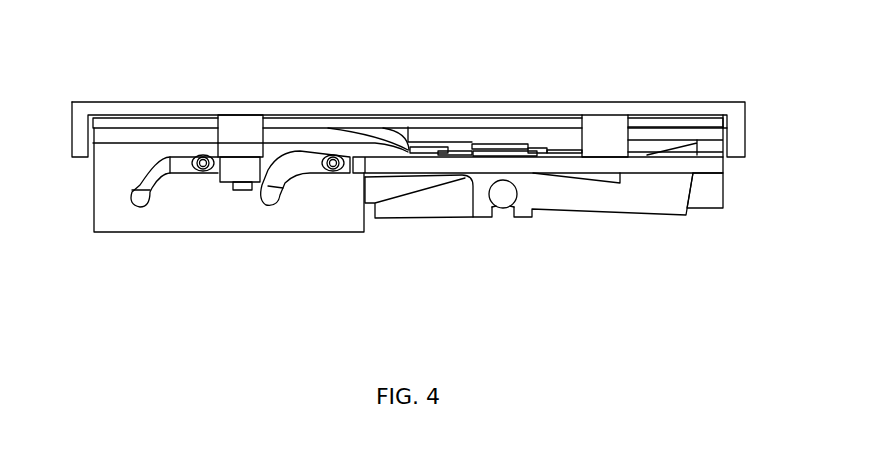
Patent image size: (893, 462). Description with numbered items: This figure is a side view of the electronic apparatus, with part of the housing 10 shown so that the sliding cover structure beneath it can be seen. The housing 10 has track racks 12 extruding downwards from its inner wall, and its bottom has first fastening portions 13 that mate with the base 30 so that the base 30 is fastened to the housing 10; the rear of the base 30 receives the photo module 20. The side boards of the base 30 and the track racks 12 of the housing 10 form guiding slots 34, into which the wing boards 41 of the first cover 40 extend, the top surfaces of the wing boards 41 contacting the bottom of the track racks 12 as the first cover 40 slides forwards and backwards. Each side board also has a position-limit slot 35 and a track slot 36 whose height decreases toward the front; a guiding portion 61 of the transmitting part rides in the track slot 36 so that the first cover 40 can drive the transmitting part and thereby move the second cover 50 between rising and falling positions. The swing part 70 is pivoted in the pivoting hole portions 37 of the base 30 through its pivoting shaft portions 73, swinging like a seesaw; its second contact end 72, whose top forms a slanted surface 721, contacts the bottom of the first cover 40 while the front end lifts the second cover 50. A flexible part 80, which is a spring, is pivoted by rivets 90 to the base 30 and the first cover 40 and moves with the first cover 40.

The housing 10 is at (117, 100).
The track rack 12 is at (290, 123).
The first fastening portion 13 is at (608, 133).
The photo module 20 is at (708, 213).
The base 30 is at (113, 238).
The guiding slot 34 is at (378, 133).
The position-limit slot 35 is at (243, 191).
The track slot 36 is at (143, 208).
The pivoting hole portion 37 is at (487, 198).
The first cover 40 is at (483, 126).
The wing board 41 is at (522, 137).
The second cover 50 is at (148, 127).
The guiding portion 61 is at (207, 156).
The swing part 70 is at (422, 223).
The second contact end 72 is at (692, 188).
The slanted surface 721 is at (668, 150).
The pivoting shaft portion 73 is at (503, 198).
The flexible part 80 is at (530, 157).
The rivet 90 is at (432, 141).